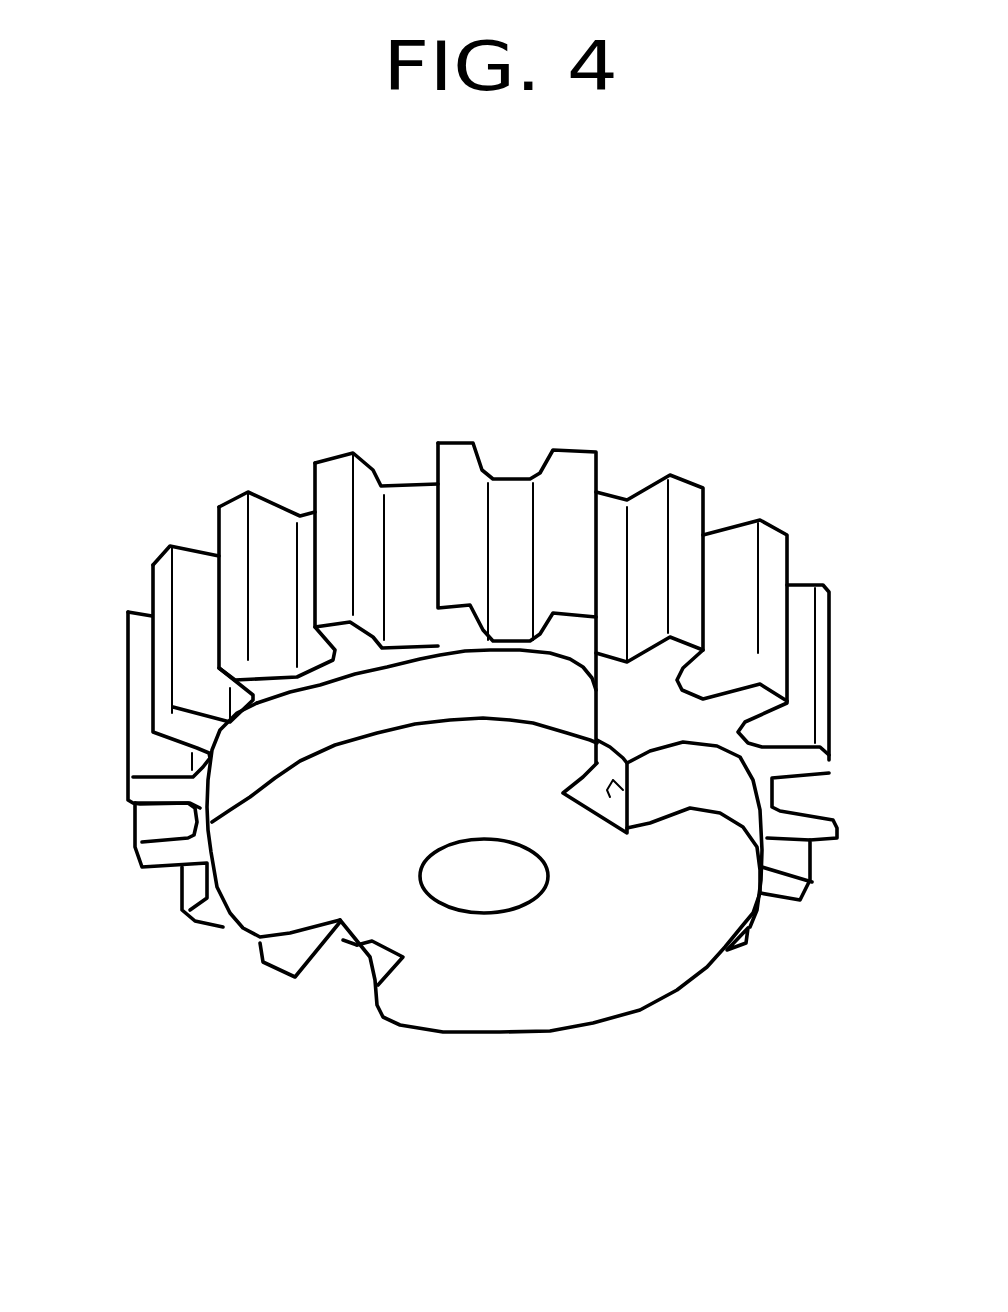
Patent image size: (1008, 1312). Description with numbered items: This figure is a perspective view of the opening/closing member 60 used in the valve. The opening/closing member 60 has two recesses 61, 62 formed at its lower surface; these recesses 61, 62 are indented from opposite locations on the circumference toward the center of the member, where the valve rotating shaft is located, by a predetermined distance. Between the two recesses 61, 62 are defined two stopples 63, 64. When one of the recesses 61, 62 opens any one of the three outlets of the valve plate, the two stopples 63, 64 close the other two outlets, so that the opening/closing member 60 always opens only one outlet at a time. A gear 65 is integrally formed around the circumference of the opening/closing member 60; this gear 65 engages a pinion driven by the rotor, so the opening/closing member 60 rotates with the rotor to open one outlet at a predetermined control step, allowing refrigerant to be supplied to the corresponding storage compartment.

The opening/closing member 60 is at (485, 731).
The recess 61 is at (347, 943).
The recess 62 is at (676, 818).
The stopple 63 is at (583, 960).
The stopple 64 is at (267, 885).
The gear 65 is at (368, 487).